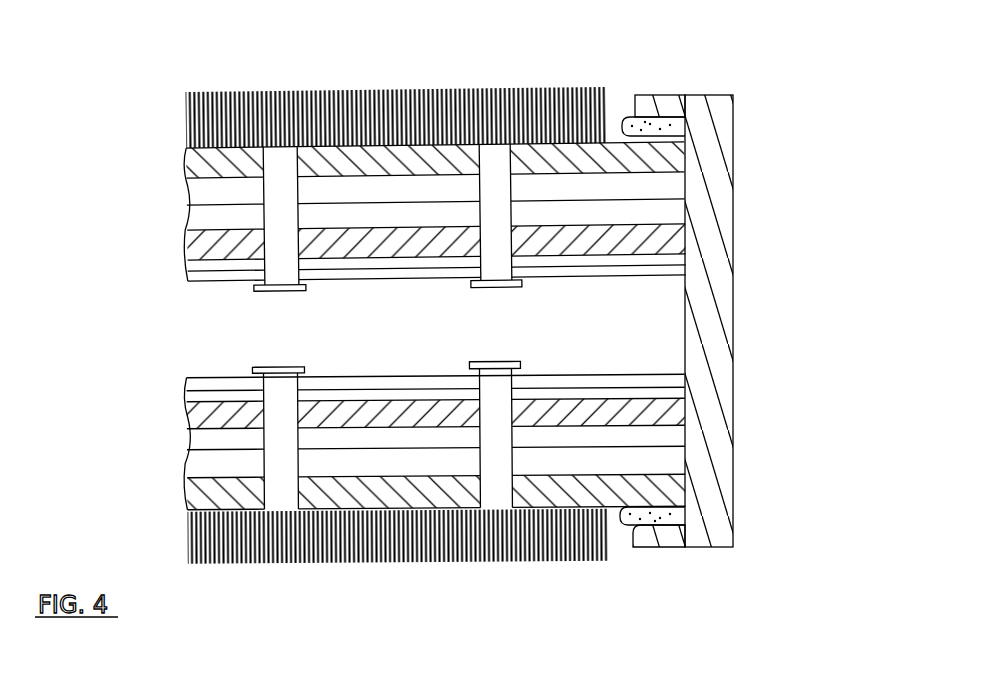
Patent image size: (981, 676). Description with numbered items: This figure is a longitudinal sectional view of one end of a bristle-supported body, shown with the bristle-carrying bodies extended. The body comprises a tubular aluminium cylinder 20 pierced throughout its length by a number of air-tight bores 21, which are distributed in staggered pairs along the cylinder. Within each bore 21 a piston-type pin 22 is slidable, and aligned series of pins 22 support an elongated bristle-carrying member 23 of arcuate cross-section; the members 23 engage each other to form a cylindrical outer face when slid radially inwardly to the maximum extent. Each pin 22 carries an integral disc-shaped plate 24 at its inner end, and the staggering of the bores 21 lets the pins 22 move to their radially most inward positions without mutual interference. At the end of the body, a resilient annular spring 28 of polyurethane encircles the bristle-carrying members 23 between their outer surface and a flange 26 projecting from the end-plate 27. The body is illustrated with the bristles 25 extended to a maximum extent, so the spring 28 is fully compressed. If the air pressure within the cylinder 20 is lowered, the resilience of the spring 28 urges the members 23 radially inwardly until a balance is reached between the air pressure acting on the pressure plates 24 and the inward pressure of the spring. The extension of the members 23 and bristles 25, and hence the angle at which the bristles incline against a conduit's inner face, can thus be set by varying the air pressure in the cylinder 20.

The tubular aluminium cylinder 20 is at (202, 412).
The air-tight bore 21 is at (520, 250).
The piston-type pin 22 is at (283, 230).
The bristle-carrying member 23 is at (550, 155).
The disc-shaped plate 24 is at (275, 292).
The bristles 25 is at (383, 92).
The flange 26 is at (657, 103).
The end-plate 27 is at (727, 270).
The resilient annular spring 28 is at (668, 123).